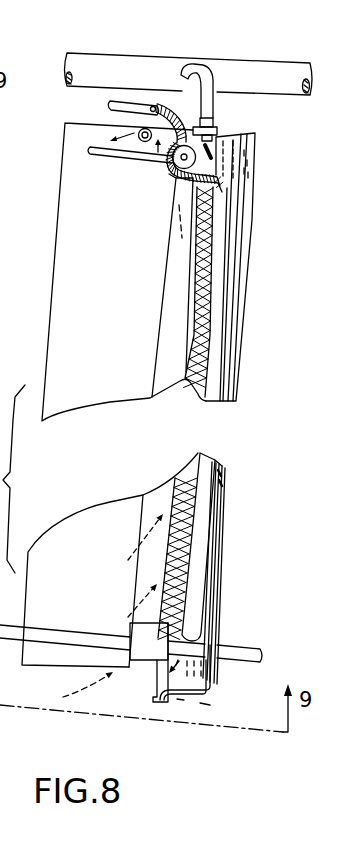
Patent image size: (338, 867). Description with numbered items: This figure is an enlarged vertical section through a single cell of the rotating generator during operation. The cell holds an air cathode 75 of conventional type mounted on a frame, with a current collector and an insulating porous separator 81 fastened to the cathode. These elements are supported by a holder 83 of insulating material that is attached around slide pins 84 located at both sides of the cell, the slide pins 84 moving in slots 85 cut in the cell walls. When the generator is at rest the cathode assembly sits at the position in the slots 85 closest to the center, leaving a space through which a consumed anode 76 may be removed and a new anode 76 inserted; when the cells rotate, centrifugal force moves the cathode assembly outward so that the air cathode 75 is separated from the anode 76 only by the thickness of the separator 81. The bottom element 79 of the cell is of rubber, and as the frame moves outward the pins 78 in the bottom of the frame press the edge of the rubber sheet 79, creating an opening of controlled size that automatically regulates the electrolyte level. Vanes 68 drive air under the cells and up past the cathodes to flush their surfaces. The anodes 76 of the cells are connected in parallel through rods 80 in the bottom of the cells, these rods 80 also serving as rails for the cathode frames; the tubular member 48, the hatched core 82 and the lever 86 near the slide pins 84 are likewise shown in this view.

The support tube 48 is at (181, 64).
The vanes 68 is at (43, 668).
The air cathode 75 is at (195, 285).
The anode 76 is at (230, 230).
The pins 78 is at (155, 683).
The bottom element (rubber sheet) 79 is at (197, 685).
The rods 80 is at (233, 643).
The insulating porous separator 81 is at (213, 290).
The hatched core 82 is at (203, 356).
The holder 83 is at (172, 163).
The slide pins 84 is at (195, 150).
The slots 85 is at (128, 152).
The lever 86 is at (137, 133).